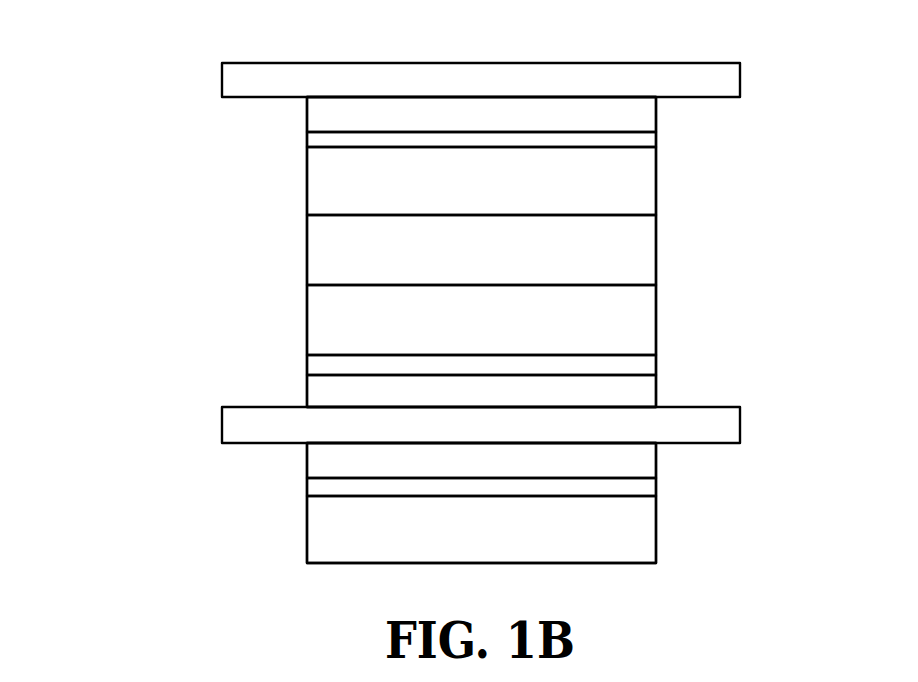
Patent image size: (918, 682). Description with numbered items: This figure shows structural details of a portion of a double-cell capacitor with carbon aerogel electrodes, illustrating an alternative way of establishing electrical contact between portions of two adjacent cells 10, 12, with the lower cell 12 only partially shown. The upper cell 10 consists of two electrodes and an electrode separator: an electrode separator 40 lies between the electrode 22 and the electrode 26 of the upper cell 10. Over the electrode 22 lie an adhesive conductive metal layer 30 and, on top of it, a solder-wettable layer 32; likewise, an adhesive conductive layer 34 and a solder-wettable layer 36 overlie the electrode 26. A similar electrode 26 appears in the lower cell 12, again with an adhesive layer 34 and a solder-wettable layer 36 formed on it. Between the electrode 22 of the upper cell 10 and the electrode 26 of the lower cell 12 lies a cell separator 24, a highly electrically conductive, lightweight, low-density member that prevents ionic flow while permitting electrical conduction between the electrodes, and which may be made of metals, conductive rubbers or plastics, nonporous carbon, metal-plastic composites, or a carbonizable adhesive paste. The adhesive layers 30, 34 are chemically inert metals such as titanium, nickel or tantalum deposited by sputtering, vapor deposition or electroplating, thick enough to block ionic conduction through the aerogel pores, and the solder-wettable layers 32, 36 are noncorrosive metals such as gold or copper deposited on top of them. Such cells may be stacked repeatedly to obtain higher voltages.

The cell 10 is at (158, 364).
The cell 12 is at (172, 537).
The electrode 22 is at (656, 320).
The cell separator 24 is at (418, 63).
The electrode 26 is at (656, 190).
The adhesive conductive metal layer 30 is at (307, 358).
The solder-wettable layer 32 is at (656, 385).
The adhesive conductive layer 34 is at (697, 513).
The solder-wettable layer 36 is at (656, 116).
The electrode separator 40 is at (307, 258).